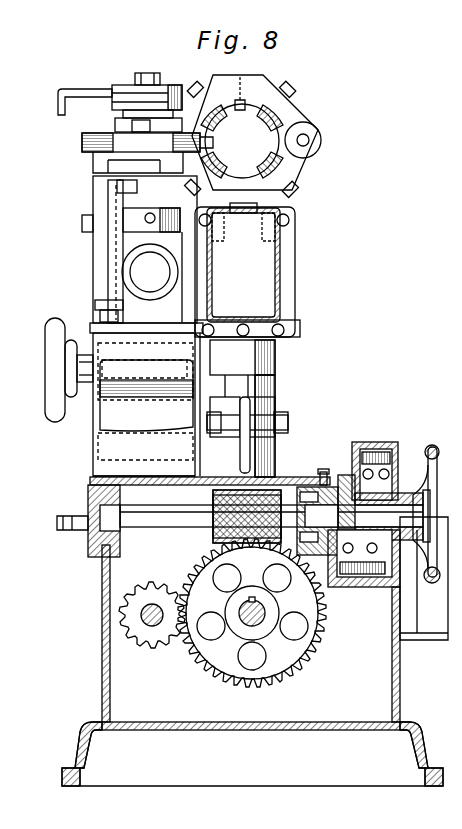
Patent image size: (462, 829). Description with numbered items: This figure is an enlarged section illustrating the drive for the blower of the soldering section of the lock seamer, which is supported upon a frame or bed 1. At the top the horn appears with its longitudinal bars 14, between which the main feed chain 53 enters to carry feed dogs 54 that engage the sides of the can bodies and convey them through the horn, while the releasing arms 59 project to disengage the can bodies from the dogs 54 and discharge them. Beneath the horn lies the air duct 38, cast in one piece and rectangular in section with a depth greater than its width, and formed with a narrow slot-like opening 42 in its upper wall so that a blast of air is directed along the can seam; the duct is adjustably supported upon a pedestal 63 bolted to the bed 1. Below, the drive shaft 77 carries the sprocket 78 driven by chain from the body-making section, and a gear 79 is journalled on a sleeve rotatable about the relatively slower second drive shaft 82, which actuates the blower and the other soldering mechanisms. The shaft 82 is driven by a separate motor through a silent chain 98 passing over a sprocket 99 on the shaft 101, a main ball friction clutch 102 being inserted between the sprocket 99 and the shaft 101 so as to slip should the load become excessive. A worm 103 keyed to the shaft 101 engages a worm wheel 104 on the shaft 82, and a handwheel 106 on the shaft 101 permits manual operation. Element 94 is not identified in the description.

The frame or bed 1 is at (80, 745).
The longitudinal bars 14 is at (213, 97).
The air duct 38 is at (290, 283).
The slot-like opening 42 is at (243, 213).
The main feed chain 53 is at (92, 145).
The feed dogs 54 is at (210, 141).
The releasing arms 59 is at (108, 91).
The pedestal 63 is at (283, 458).
The drive shaft 77 is at (141, 616).
The sprocket 78 is at (120, 601).
The gear 79 is at (182, 647).
The second drive shaft 82 is at (306, 630).
The pin 94 is at (144, 218).
The silent chain 98 is at (376, 460).
The sprocket 99 is at (400, 455).
The shaft 101 is at (352, 566).
The main ball friction clutch 102 is at (340, 485).
The worm 103 is at (212, 500).
The worm wheel 104 is at (213, 562).
The handwheel 106 is at (426, 580).